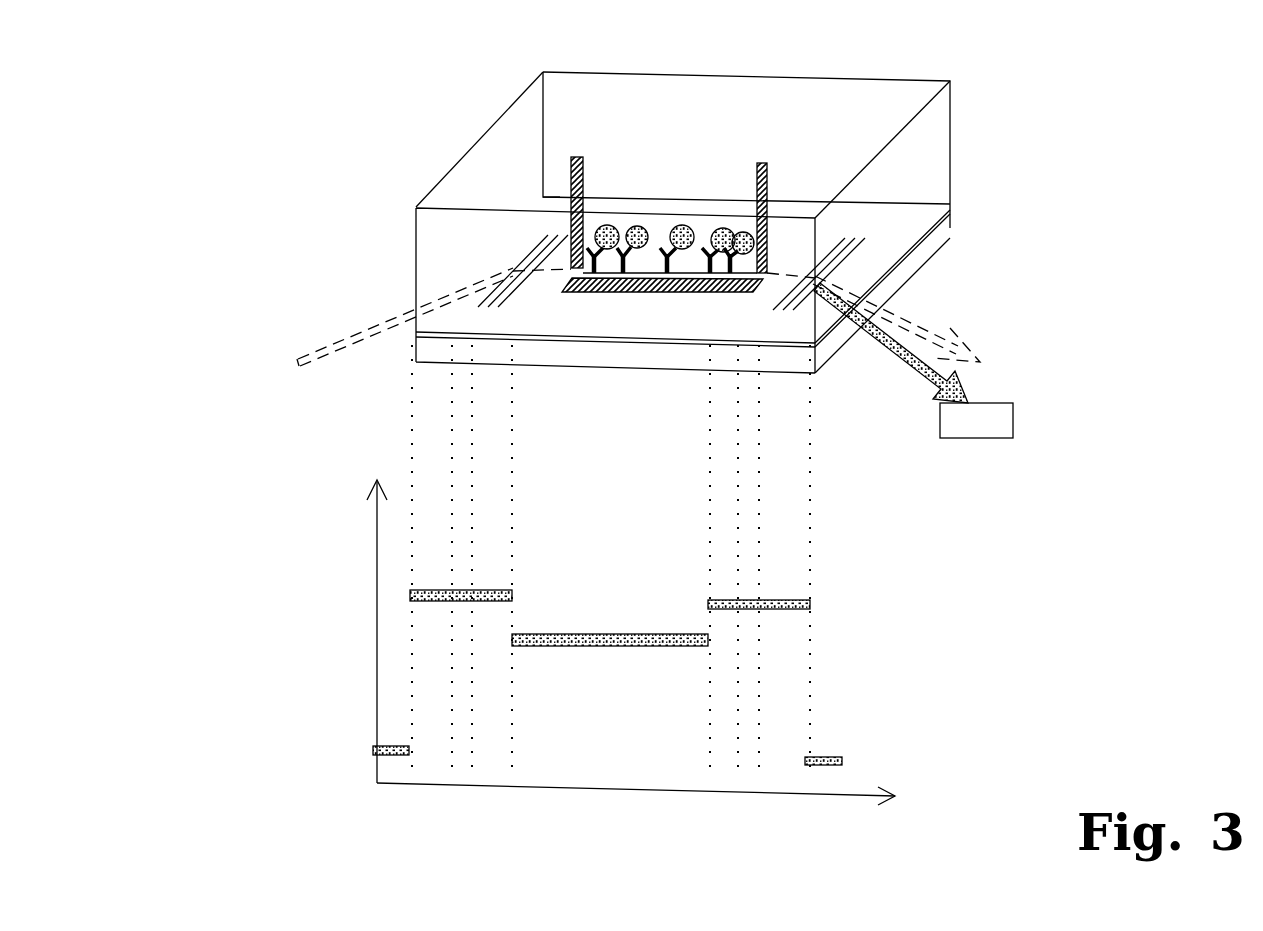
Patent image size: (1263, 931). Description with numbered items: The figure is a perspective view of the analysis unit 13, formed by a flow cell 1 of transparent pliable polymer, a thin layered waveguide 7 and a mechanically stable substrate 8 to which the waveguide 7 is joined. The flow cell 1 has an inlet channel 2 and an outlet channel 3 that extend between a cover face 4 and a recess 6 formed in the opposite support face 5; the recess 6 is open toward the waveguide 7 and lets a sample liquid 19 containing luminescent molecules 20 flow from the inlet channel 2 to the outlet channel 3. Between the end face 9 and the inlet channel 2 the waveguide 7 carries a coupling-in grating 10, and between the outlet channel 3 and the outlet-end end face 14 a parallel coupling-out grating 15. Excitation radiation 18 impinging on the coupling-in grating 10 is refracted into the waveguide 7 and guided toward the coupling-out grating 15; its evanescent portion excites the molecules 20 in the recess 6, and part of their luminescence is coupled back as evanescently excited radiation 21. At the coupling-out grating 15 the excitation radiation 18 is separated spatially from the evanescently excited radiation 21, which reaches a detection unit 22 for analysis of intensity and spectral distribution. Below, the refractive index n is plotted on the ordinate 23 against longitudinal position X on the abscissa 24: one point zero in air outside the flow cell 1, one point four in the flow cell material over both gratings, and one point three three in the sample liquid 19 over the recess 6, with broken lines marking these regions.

The flow cell 1 is at (952, 107).
The inlet channel 2 is at (588, 167).
The outlet channel 3 is at (770, 183).
The cover face 4 is at (598, 122).
The support face 5 is at (586, 322).
The recess 6 is at (640, 292).
The waveguide 7 is at (853, 262).
The substrate 8 is at (920, 262).
The end face 9 is at (415, 263).
The coupling-in grating 10 is at (518, 252).
The analysis unit 13 is at (450, 112).
The outlet-end end face 14 is at (933, 153).
The coupling-out grating 15 is at (925, 245).
The excitation radiation 18 is at (360, 345).
The sample liquid 19 is at (773, 182).
The luminescent molecules 20 is at (741, 231).
The evanescently excited radiation 21 is at (900, 345).
The detection unit 22 is at (987, 438).
The ordinate 23 is at (377, 562).
The abscissa 24 is at (646, 677).